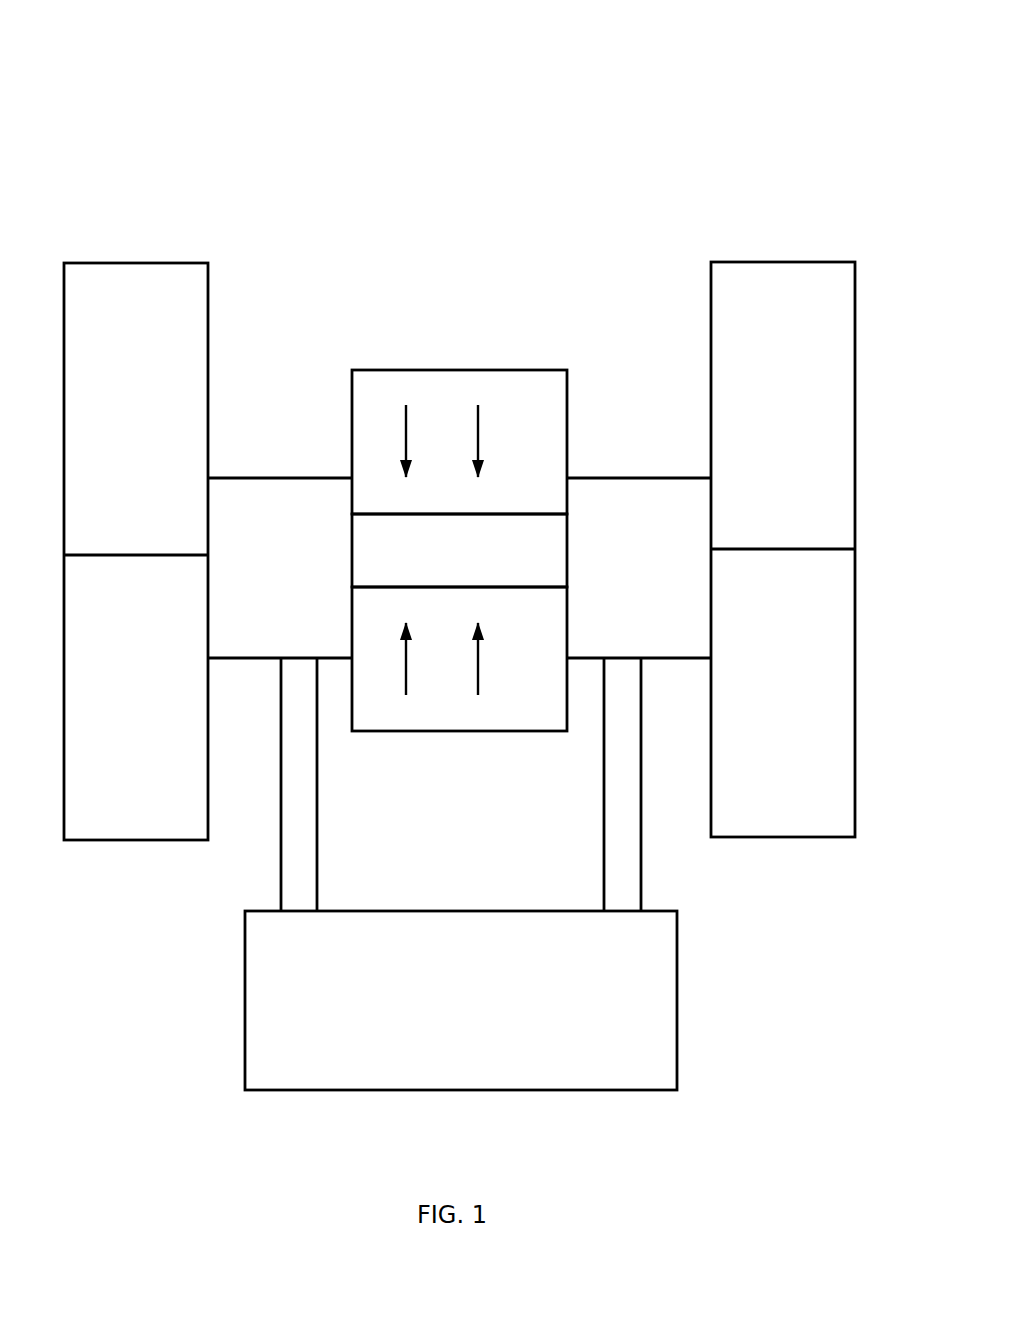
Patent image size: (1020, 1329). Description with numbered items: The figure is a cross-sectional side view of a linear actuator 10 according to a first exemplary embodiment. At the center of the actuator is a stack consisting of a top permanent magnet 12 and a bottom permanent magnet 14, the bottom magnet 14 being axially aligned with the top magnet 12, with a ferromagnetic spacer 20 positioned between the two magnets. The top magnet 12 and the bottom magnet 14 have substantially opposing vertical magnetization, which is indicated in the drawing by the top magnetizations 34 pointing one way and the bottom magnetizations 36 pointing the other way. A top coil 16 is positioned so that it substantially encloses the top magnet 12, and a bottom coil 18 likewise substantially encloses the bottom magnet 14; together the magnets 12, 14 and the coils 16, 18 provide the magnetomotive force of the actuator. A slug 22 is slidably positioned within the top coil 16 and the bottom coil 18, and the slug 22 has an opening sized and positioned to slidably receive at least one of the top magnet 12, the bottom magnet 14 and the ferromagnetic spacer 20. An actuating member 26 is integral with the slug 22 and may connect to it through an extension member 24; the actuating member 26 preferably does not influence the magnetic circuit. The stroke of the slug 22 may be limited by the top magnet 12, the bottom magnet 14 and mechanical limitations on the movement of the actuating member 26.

The linear actuator 10 is at (604, 171).
The top permanent magnet 12 is at (458, 370).
The bottom permanent magnet 14 is at (423, 731).
The top coil 16 is at (135, 262).
The bottom coil 18 is at (802, 837).
The ferromagnetic spacer 20 is at (495, 512).
The slug 22 is at (317, 475).
The extension member 24 is at (282, 840).
The actuating member 26 is at (244, 1059).
The top magnetizations 34 is at (404, 438).
The bottom magnetizations 36 is at (407, 660).